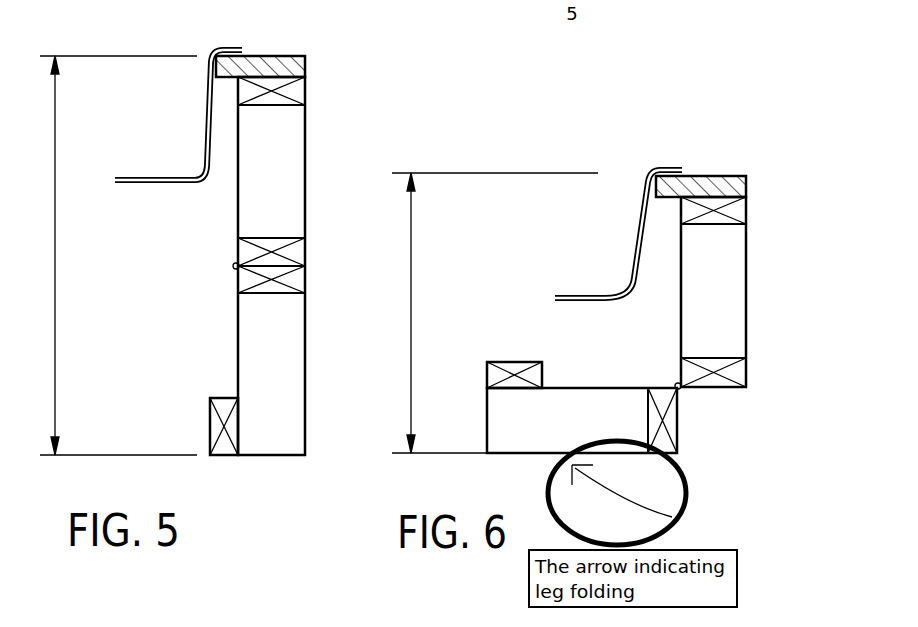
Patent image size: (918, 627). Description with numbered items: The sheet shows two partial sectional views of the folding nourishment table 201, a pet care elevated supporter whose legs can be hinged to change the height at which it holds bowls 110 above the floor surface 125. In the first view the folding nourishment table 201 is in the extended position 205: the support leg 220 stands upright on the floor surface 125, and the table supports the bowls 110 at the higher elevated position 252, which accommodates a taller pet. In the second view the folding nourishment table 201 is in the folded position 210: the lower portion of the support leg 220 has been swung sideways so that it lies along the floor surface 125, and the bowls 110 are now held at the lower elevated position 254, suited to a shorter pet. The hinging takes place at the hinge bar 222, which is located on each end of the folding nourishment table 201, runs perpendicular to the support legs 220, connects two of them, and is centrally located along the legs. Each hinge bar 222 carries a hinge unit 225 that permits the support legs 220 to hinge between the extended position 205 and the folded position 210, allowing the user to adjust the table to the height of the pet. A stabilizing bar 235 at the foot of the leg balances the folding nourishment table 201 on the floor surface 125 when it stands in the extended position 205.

In FIG. 5, the bowls 110 is at (200, 138).
In FIG. 6, the bowls 110 is at (642, 248).
In FIG. 5, the floor surface 125 is at (80, 457).
In FIG. 5, the folding nourishment table 201 is at (305, 41).
In FIG. 6, the folding nourishment table 201 is at (713, 158).
In FIG. 5, the extended position 205 is at (322, 61).
In FIG. 6, the folded position 210 is at (764, 166).
In FIG. 5, the support leg 220 is at (306, 184).
In FIG. 6, the support leg 220 is at (748, 285).
In FIG. 5, the hinge bar 222 is at (240, 240).
In FIG. 6, the hinge bar 222 is at (748, 370).
In FIG. 5, the hinge unit 225 is at (233, 266).
In FIG. 6, the hinge unit 225 is at (675, 383).
In FIG. 5, the stabilizing bar 235 is at (212, 420).
In FIG. 6, the stabilizing bar 235 is at (522, 360).
In FIG. 5, the higher elevated position 252 is at (80, 55).
In FIG. 6, the lower elevated position 254 is at (432, 172).